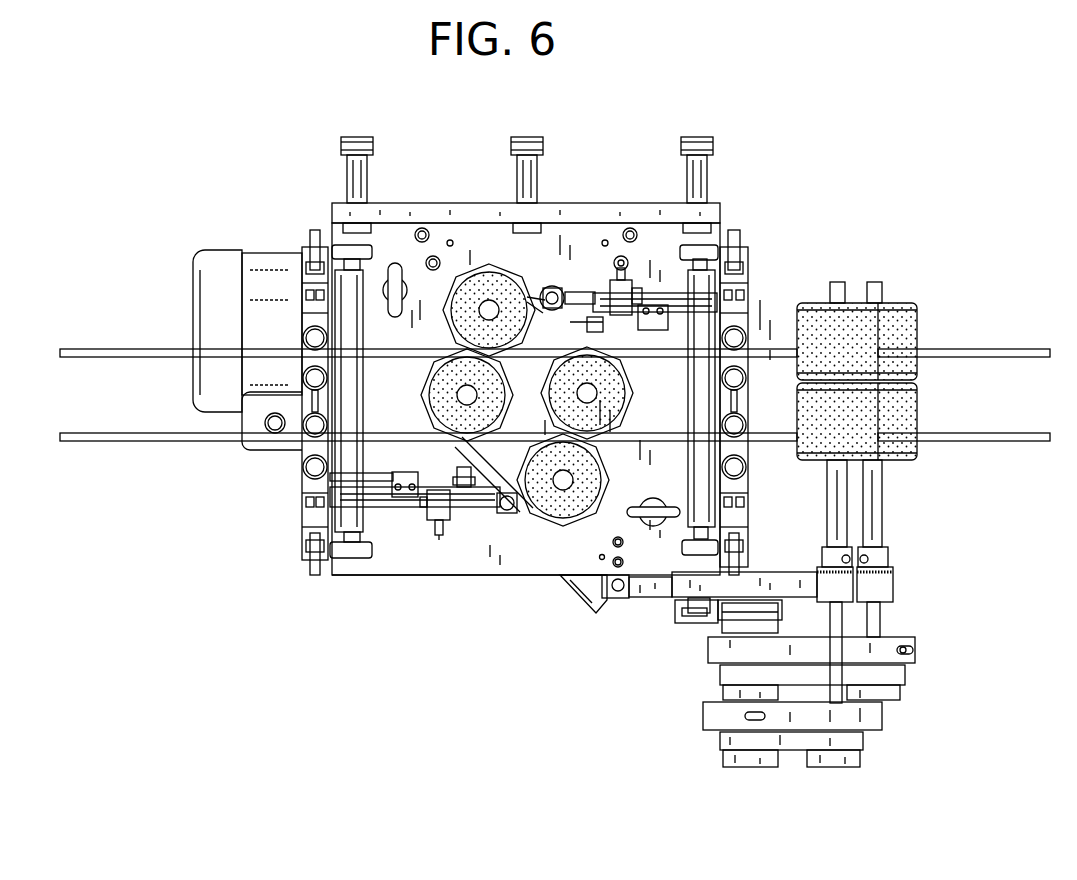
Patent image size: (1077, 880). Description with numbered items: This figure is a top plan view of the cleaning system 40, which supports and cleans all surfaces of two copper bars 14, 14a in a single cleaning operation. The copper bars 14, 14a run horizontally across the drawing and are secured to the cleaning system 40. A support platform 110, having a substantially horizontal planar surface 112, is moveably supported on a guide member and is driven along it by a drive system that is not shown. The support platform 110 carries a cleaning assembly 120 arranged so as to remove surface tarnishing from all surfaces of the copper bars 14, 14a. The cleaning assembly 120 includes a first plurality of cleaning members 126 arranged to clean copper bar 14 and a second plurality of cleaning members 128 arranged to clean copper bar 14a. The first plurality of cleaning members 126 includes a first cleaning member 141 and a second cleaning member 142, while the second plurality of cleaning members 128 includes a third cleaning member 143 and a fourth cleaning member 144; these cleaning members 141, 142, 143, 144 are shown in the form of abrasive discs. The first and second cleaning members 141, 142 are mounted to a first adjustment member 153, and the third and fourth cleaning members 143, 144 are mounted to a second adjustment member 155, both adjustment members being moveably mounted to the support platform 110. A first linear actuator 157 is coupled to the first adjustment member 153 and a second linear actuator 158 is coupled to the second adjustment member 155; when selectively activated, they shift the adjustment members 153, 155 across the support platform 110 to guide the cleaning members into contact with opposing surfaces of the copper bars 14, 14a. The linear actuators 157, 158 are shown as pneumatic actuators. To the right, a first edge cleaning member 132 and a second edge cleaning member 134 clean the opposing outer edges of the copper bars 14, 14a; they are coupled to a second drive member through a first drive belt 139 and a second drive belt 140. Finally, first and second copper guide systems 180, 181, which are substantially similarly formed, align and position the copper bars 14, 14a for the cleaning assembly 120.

The copper bar 14 is at (1011, 349).
The copper bar 14a is at (1008, 441).
The cleaning system 40 is at (205, 218).
The support platform 110 is at (349, 579).
The substantially horizontal planar surface 112 is at (563, 566).
The cleaning assembly 120 is at (388, 326).
The first plurality of cleaning members 126 is at (531, 521).
The second plurality of cleaning members 128 is at (516, 281).
The first edge cleaning member 132 is at (871, 369).
The second edge cleaning member 134 is at (911, 464).
The first drive belt 139 is at (900, 672).
The second drive belt 140 is at (795, 742).
The first cleaning member 141 is at (447, 420).
The second cleaning member 142 is at (564, 500).
The third cleaning member 143 is at (486, 300).
The fourth cleaning member 144 is at (583, 352).
The first adjustment member 153 is at (500, 455).
The second adjustment member 155 is at (549, 327).
The first linear actuator 157 is at (402, 502).
The second linear actuator 158 is at (655, 305).
The first copper guide system 180 is at (290, 512).
The second copper guide system 181 is at (762, 253).